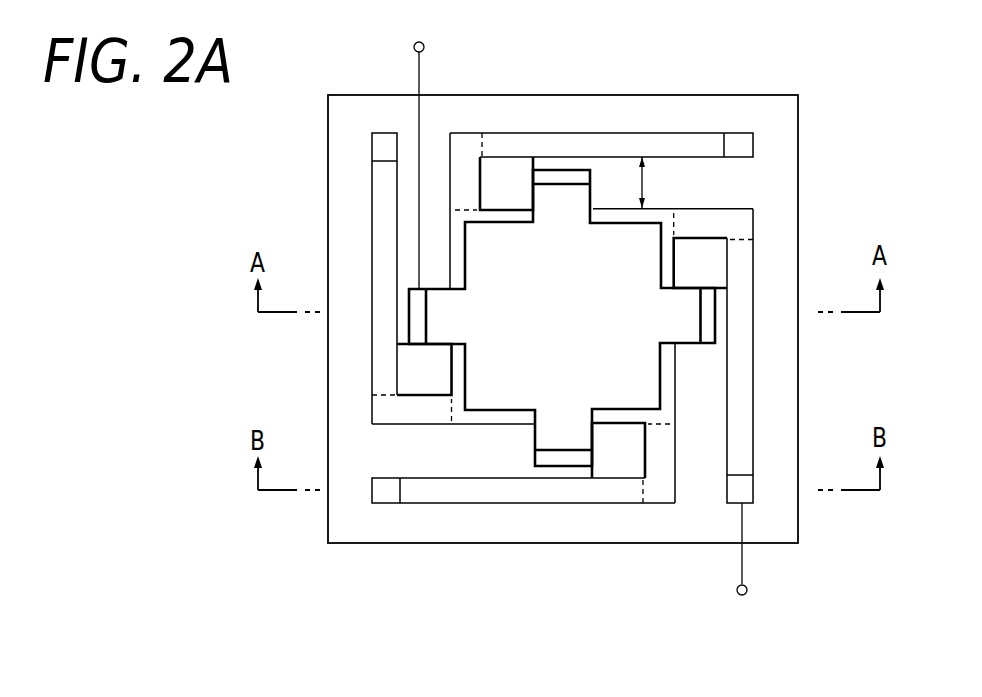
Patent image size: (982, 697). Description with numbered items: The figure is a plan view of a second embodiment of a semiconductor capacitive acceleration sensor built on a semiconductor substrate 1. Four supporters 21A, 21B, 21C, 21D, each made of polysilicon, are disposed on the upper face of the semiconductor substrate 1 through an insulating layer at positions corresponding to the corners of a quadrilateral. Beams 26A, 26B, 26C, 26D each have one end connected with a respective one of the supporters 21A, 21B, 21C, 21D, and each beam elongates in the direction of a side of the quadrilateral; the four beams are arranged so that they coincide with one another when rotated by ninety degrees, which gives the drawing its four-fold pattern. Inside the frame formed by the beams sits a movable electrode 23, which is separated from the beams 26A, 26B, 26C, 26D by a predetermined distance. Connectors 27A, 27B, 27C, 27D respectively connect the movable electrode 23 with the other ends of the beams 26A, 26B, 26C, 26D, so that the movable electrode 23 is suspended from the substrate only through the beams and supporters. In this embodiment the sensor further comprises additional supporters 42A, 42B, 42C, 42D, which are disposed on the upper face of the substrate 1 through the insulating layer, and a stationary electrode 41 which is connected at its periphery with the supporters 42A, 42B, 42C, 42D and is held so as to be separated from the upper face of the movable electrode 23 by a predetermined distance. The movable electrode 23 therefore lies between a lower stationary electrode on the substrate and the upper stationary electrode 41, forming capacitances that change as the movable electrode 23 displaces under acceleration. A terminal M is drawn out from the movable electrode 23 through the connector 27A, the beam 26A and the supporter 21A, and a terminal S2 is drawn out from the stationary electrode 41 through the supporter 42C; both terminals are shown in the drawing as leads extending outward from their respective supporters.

The semiconductor substrate 1 is at (613, 547).
The supporter 21A is at (743, 490).
The supporter 21B is at (742, 148).
The supporter 21C is at (383, 145).
The supporter 21D is at (388, 503).
The movable electrode 23 is at (668, 253).
The beam 26A is at (763, 242).
The beam 26B is at (540, 150).
The beam 26C is at (383, 207).
The beam 26D is at (497, 505).
The connector 27A is at (736, 257).
The connector 27B is at (473, 148).
The connector 27C is at (405, 412).
The connector 27D is at (662, 475).
The stationary electrode 41 is at (637, 255).
The supporter 42A is at (688, 335).
The supporter 42B is at (580, 203).
The supporter 42C is at (435, 325).
The supporter 42D is at (572, 452).
The terminal S2 is at (420, 146).
The terminal M is at (758, 554).